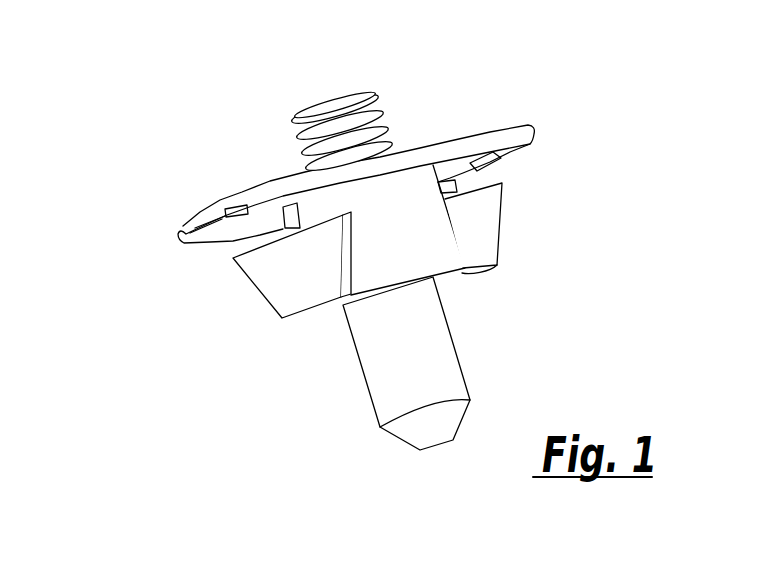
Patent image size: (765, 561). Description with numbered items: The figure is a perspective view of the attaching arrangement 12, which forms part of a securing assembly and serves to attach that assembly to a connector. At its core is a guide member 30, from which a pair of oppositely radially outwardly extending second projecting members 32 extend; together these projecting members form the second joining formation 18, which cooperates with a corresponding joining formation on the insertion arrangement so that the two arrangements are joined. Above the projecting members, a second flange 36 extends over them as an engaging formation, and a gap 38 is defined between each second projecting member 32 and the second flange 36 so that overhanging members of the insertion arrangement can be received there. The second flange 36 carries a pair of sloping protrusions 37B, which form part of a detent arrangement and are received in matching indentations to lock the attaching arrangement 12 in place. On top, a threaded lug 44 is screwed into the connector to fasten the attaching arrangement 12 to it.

The attaching arrangement 12 is at (347, 246).
The second joining formation 18 is at (387, 188).
The guide member 30 is at (437, 363).
The second projecting members 32 is at (268, 269).
The second flange 36 is at (347, 159).
The sloping protrusions 37B is at (193, 249).
The gap 38 is at (293, 200).
The threaded lug 44 is at (313, 100).